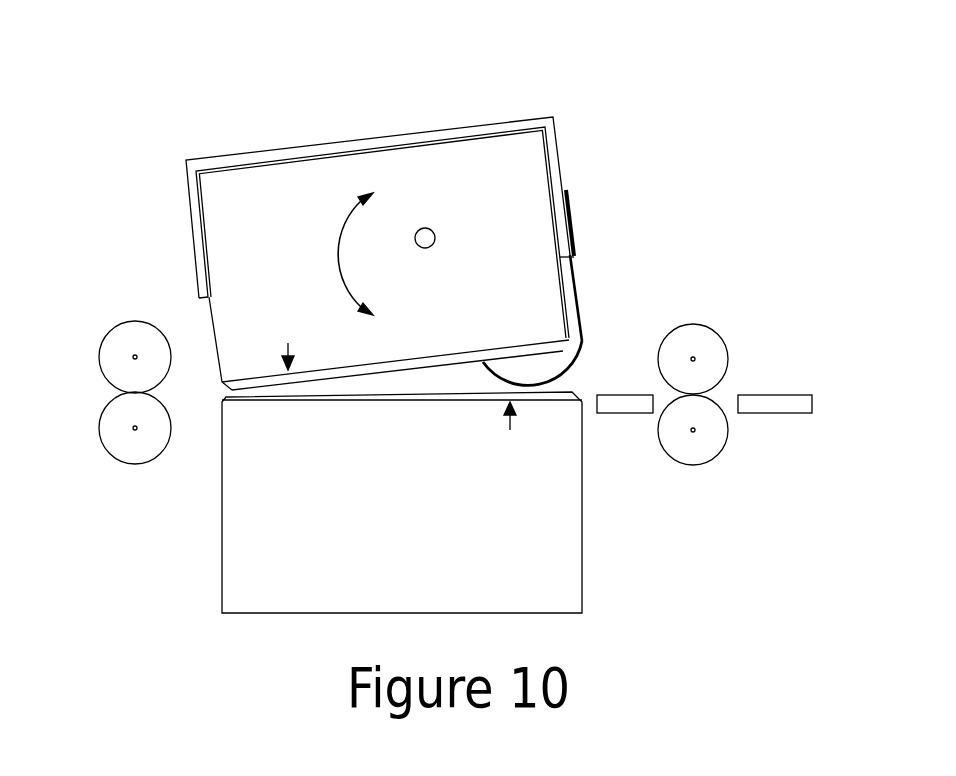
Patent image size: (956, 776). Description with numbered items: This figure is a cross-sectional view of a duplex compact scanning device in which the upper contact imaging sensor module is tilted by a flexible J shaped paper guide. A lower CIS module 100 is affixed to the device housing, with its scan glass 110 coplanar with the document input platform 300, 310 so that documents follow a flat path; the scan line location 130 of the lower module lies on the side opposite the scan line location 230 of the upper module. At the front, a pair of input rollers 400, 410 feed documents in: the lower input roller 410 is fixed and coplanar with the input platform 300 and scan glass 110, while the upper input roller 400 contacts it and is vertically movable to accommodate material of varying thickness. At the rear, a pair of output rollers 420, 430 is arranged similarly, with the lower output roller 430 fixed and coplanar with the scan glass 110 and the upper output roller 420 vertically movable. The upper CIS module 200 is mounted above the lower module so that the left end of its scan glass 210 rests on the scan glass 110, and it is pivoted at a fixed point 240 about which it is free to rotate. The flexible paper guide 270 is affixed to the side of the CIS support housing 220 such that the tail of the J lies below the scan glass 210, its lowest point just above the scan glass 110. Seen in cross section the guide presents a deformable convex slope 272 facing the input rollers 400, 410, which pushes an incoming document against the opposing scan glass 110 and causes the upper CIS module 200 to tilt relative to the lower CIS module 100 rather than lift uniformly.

The lower CIS module 100 is at (270, 566).
The scan glass 110 is at (325, 395).
The scan line location 130 is at (512, 436).
The upper CIS module 200 is at (250, 223).
The scan glass 210 is at (512, 352).
The CIS support housing 220 is at (348, 140).
The scan line location 230 is at (288, 343).
The fixed point 240 is at (427, 227).
The paper guide 270 is at (576, 272).
The convex slope 272 is at (567, 373).
The document input platform 300 is at (615, 408).
The document input platform 310 is at (760, 408).
The upper input roller 400 is at (692, 337).
The lower input roller 410 is at (693, 455).
The upper output roller 420 is at (112, 353).
The lower output roller 430 is at (113, 442).